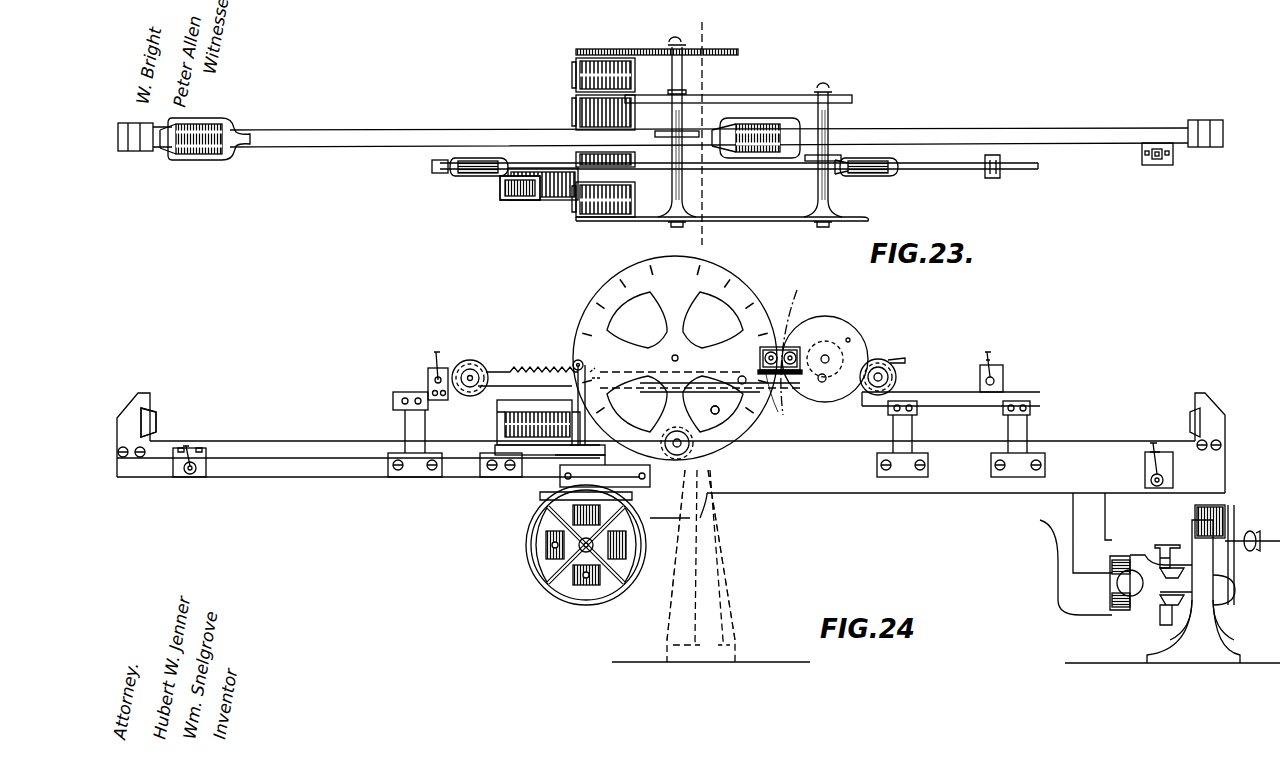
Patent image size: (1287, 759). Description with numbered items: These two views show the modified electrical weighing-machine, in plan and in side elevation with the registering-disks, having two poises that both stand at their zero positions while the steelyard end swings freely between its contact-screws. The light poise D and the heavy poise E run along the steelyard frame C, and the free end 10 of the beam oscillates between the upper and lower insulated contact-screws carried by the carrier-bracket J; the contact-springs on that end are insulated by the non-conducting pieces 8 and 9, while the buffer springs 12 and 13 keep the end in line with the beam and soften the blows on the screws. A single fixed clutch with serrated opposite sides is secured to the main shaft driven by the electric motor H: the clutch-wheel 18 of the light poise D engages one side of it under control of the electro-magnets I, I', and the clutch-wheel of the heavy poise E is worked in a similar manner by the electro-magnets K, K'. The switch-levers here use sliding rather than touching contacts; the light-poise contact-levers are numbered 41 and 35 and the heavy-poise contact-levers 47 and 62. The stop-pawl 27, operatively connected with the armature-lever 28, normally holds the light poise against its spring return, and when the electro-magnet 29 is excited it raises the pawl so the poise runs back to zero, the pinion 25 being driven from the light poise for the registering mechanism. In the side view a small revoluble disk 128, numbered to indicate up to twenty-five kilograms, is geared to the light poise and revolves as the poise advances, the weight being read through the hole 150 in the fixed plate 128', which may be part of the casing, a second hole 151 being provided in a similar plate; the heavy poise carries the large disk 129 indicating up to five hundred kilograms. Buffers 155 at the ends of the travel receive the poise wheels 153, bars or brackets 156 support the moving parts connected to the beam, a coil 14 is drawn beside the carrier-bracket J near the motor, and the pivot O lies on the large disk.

In FIG. 24, the non-conducting piece 8 is at (1176, 580).
In FIG. 24, the non-conducting piece 9 is at (1172, 607).
In FIG. 24, the free end of the steelyard 10 is at (1224, 590).
In FIG. 24, the buffer spring 12 is at (1128, 558).
In FIG. 24, the buffer spring 13 is at (1120, 610).
In FIG. 24, the motor coil 14 is at (1237, 547).
In FIG. 24, the clutch-wheel 18 is at (704, 545).
In FIG. 23, the pinion 25 is at (705, 248).
In FIG. 24, the pinion 25 is at (560, 358).
In FIG. 24, the stop-pawl 27 is at (586, 362).
In FIG. 24, the armature-lever 28 is at (548, 455).
In FIG. 23, the electro-magnet 29 is at (539, 191).
In FIG. 24, the electro-magnet 29 is at (492, 420).
In FIG. 23, the light-poise contact-lever 35 is at (448, 178).
In FIG. 24, the light-poise contact-lever 35 is at (448, 370).
In FIG. 23, the light-poise contact-lever 41 is at (998, 178).
In FIG. 24, the light-poise contact-lever 41 is at (992, 358).
In FIG. 23, the heavy-poise contact-lever 47 is at (1157, 166).
In FIG. 24, the heavy-poise contact-lever 47 is at (1158, 452).
In FIG. 24, the heavy-poise contact-lever 62 is at (200, 458).
In FIG. 23, the small revoluble disk 128 is at (737, 133).
In FIG. 24, the small revoluble disk 128 is at (825, 359).
In FIG. 24, the fixed plate 128' is at (799, 347).
In FIG. 23, the indicating dial 129 is at (590, 221).
In FIG. 24, the indicating dial 129 is at (686, 358).
In FIG. 24, the hole 150 is at (784, 393).
In FIG. 24, the second hole 151 is at (770, 350).
In FIG. 23, the wheel 153 is at (165, 162).
In FIG. 24, the buffer 155 is at (157, 422).
In FIG. 23, the bar or bracket 156 is at (758, 92).
In FIG. 24, the frame C is at (671, 527).
In FIG. 23, the light poise D is at (708, 172).
In FIG. 24, the light poise D is at (490, 366).
In FIG. 23, the heavy poise E is at (705, 124).
In FIG. 24, the electric motor H is at (586, 545).
In FIG. 23, the electro-magnet I is at (611, 199).
In FIG. 23, the electro-magnet I' is at (616, 159).
In FIG. 24, the carrier-bracket J is at (1172, 591).
In FIG. 23, the electro-magnet K is at (655, 70).
In FIG. 23, the electro-magnet K' is at (617, 113).
In FIG. 24, the pivot O is at (709, 410).